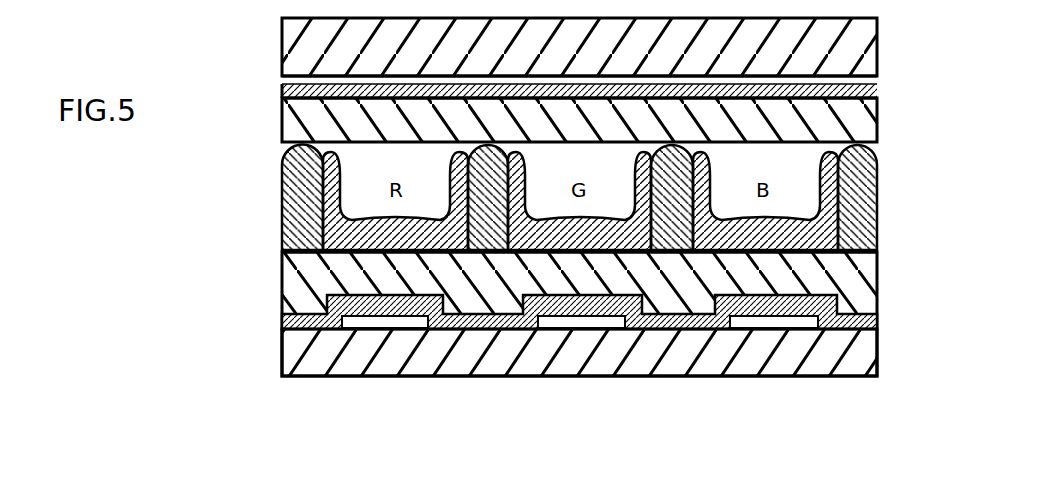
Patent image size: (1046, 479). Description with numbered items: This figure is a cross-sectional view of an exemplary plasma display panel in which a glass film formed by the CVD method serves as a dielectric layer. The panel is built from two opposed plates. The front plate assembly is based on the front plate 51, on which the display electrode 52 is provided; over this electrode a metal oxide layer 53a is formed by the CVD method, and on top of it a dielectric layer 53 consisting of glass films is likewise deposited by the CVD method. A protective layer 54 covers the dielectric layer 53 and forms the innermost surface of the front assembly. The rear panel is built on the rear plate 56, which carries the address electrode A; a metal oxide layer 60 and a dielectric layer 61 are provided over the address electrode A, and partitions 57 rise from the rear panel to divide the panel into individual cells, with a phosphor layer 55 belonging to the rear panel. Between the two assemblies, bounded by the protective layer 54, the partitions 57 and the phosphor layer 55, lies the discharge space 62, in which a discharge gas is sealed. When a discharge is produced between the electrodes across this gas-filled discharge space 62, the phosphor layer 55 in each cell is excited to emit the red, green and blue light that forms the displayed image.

The front plate 51 is at (872, 58).
The display electrode 52 is at (870, 82).
The dielectric layer 53 is at (872, 114).
The metal oxide layer 53a is at (282, 88).
The protective layer 54 is at (282, 140).
The phosphor layer 55 is at (313, 253).
The rear plate 56 is at (872, 360).
The partition 57 is at (285, 217).
The metal oxide layer 60 is at (872, 318).
The dielectric layer 61 is at (872, 274).
The discharge space 62 is at (355, 182).
The address electrode A is at (765, 322).